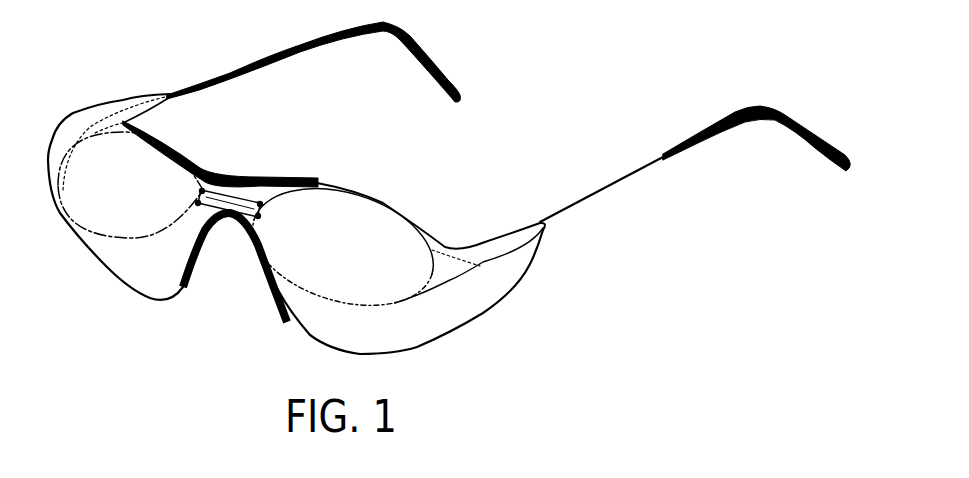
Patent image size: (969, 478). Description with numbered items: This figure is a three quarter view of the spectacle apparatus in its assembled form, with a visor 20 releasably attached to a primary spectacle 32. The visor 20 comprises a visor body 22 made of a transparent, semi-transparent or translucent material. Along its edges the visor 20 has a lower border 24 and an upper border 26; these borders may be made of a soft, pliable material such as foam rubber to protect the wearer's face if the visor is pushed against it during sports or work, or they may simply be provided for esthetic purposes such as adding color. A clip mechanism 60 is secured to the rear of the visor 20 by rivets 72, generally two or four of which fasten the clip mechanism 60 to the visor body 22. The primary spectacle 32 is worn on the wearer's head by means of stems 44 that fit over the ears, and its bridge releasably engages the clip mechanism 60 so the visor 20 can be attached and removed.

The visor 20 is at (470, 342).
The visor body 22 is at (143, 270).
The lower border 24 is at (263, 287).
The upper border 26 is at (213, 168).
The primary spectacle 32 is at (617, 223).
The stems 44 is at (600, 180).
The clip mechanism 60 is at (245, 198).
The rivets 72 is at (262, 207).